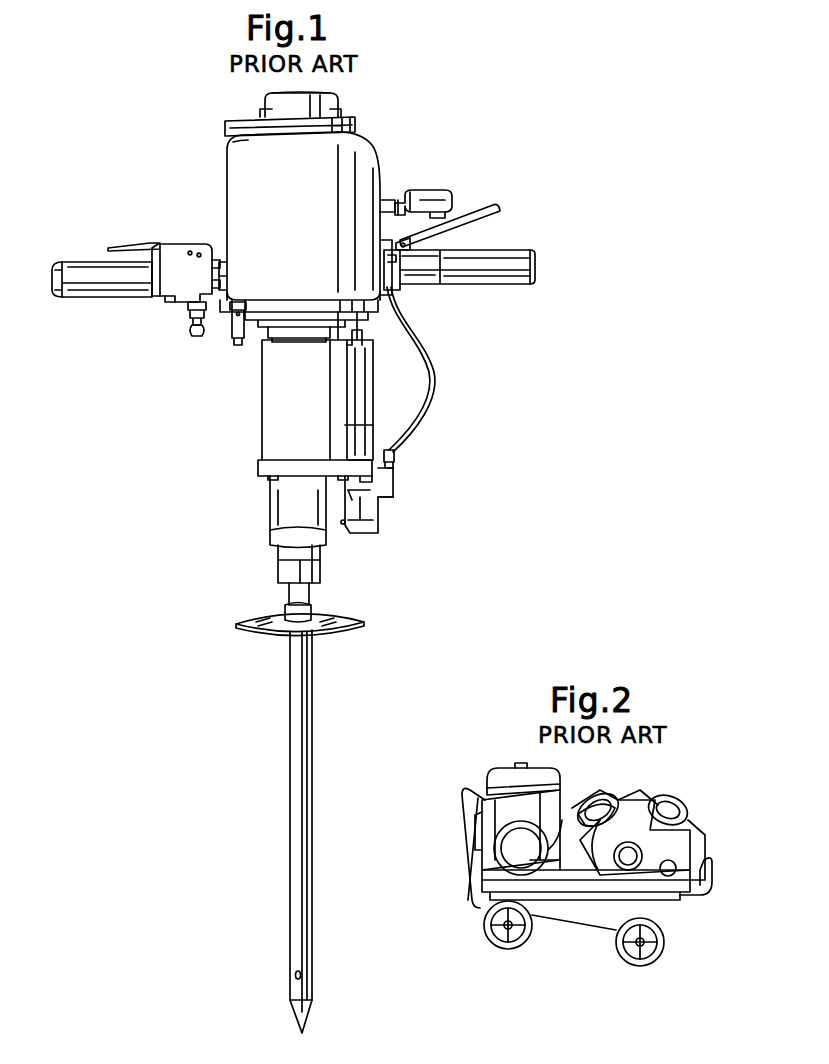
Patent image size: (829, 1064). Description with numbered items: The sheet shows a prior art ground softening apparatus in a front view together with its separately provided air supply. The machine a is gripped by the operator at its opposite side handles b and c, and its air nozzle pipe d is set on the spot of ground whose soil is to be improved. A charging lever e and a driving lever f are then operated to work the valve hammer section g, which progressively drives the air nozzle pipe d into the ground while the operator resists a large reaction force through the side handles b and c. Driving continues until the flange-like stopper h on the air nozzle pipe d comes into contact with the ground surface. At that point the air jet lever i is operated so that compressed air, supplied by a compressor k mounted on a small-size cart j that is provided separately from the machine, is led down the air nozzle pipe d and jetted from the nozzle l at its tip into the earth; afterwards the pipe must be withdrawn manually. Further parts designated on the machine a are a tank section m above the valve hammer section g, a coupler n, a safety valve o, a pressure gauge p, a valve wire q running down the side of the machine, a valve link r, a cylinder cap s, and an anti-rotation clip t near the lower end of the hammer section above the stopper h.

In FIG. 1, the machine a is at (447, 128).
In FIG. 1, the tank section m is at (345, 155).
In FIG. 1, the pressure gauge p is at (436, 192).
In FIG. 1, the air jet lever i is at (490, 208).
In FIG. 1, the side handle c is at (500, 253).
In FIG. 1, the side handle b is at (84, 264).
In FIG. 1, the driving lever f is at (124, 248).
In FIG. 1, the charging lever e is at (150, 246).
In FIG. 1, the coupler n is at (190, 325).
In FIG. 1, the safety valve o is at (236, 340).
In FIG. 1, the valve wire q is at (438, 378).
In FIG. 1, the valve hammer section g is at (287, 392).
In FIG. 1, the valve link r is at (361, 520).
In FIG. 1, the cylinder cap s is at (272, 535).
In FIG. 1, the anti-rotation clip t is at (326, 572).
In FIG. 1, the flange-like stopper h is at (331, 632).
In FIG. 1, the air nozzle pipe d is at (302, 752).
In FIG. 1, the nozzle l is at (303, 975).
In FIG. 2, the compressor k is at (568, 800).
In FIG. 2, the small-size cart j is at (580, 908).